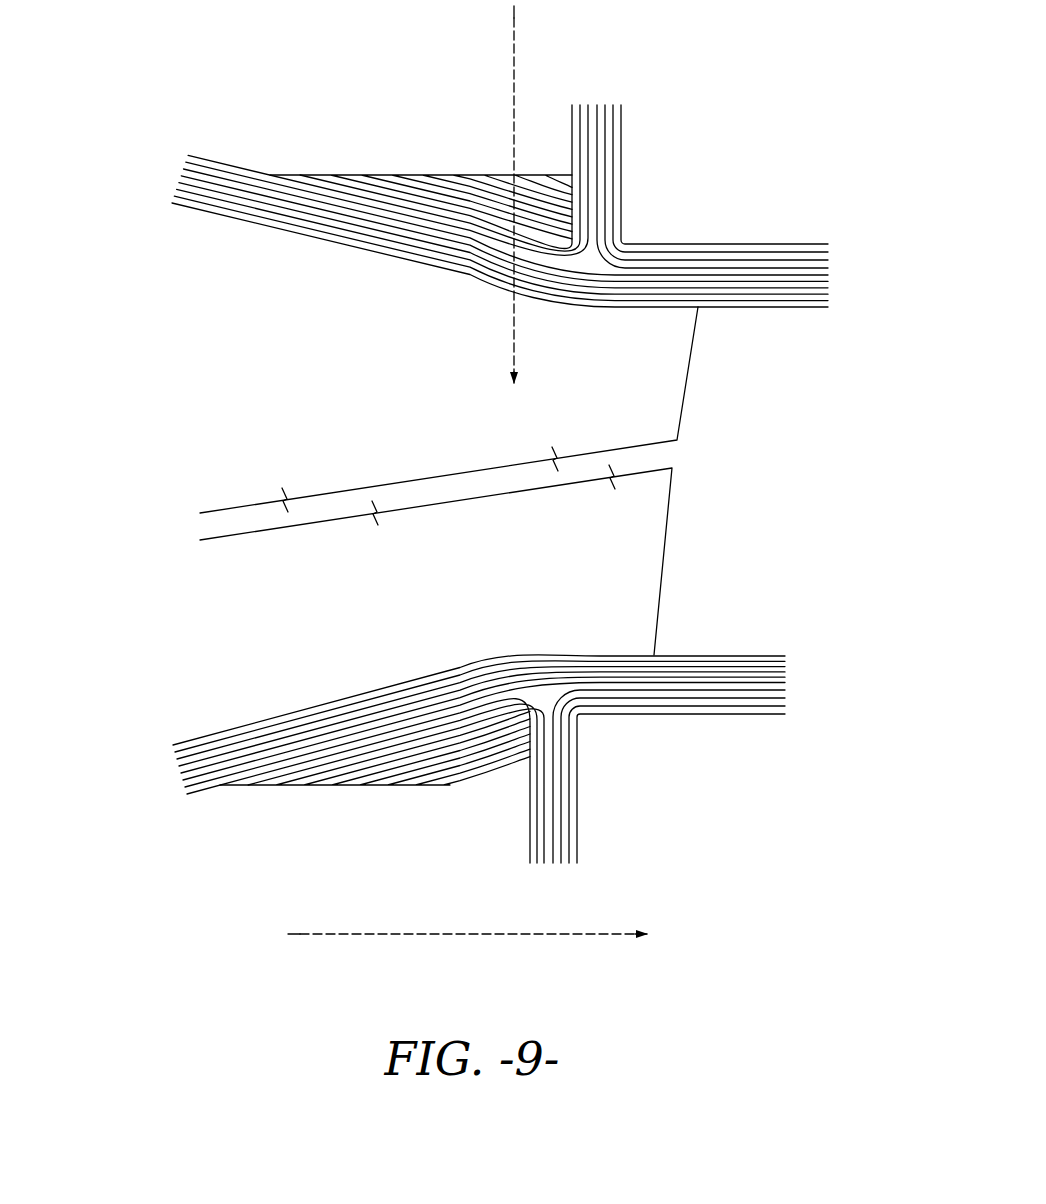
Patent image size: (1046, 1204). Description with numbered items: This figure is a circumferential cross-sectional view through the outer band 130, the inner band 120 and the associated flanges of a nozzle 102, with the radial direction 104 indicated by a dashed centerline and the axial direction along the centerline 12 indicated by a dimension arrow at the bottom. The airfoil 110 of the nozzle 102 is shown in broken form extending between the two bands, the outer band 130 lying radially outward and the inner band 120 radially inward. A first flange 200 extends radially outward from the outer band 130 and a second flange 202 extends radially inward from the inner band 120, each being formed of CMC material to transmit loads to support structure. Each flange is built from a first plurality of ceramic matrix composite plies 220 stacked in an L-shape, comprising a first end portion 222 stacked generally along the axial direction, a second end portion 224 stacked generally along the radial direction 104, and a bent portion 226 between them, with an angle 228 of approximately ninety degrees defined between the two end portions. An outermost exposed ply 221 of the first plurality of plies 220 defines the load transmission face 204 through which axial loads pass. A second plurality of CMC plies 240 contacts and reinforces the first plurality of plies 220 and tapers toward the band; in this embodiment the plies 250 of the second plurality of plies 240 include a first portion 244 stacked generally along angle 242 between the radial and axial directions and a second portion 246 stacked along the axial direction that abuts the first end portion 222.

The centerline 12 is at (385, 937).
The nozzle 102 is at (147, 348).
The radial direction 104 is at (510, 62).
The airfoil 110 is at (213, 440).
The inner band 120 is at (296, 715).
The outer band 130 is at (240, 226).
The first flange 200 is at (648, 98).
The second flange 202 is at (612, 820).
The load transmission face 204 is at (623, 170).
The first plurality of ceramic matrix composite plies 220 is at (678, 202).
The outermost exposed ply 221 is at (623, 148).
The first end portion 222 is at (617, 83).
The second end portion 224 is at (772, 233).
The bent portion 226 is at (635, 233).
The angle 228 is at (622, 195).
The second plurality of CMC plies 240 is at (428, 162).
The angle 242 is at (550, 180).
The first portion 244 is at (358, 207).
The second portion 246 is at (594, 101).
The plies 250 is at (490, 205).